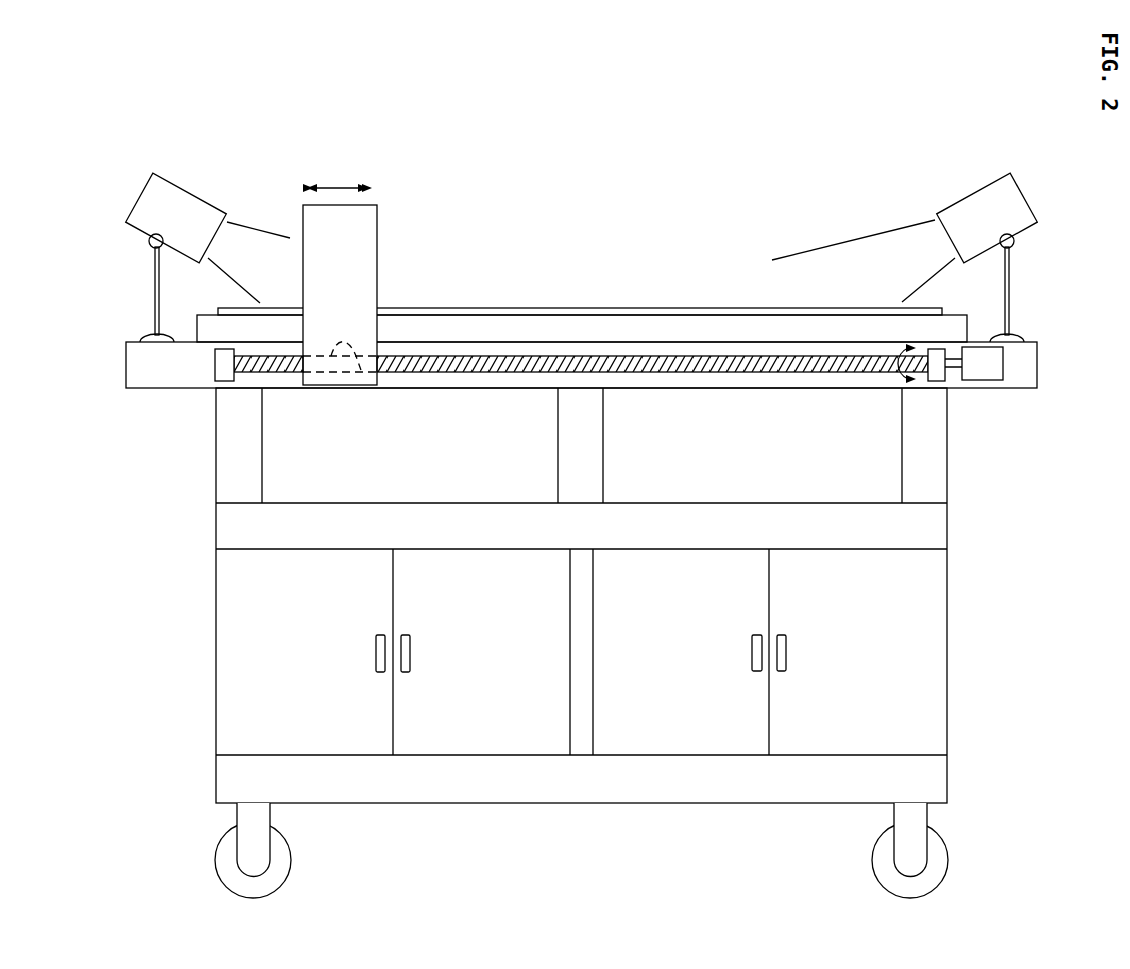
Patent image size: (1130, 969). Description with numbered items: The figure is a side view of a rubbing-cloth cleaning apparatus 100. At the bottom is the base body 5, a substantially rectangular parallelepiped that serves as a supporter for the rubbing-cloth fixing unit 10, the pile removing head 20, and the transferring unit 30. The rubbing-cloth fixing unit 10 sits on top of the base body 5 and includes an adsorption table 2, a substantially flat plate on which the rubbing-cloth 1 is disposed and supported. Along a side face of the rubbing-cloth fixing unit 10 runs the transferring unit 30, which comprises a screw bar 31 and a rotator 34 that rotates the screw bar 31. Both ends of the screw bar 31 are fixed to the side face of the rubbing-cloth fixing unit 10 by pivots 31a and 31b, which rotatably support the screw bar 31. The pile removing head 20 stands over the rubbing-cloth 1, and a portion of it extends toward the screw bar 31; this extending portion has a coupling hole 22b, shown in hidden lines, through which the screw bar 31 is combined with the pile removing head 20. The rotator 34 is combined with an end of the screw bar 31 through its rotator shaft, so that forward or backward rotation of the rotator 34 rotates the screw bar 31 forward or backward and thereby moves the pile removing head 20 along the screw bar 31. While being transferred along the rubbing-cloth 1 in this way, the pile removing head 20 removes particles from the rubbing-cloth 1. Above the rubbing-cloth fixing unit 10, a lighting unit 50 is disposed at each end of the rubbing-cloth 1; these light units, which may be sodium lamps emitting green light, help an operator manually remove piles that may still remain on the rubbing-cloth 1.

The rubbing-cloth cleaning apparatus 100 is at (750, 124).
The rubbing-cloth 1 is at (603, 312).
The adsorption table 2 is at (700, 323).
The rubbing-cloth fixing unit 10 is at (502, 298).
The pile removing head 20 is at (395, 191).
The coupling hole 22b is at (362, 373).
The transferring unit 30 is at (248, 386).
The screw bar 31 is at (285, 371).
The pivot 31a is at (223, 363).
The pivot 31b is at (937, 382).
The rotator 34 is at (990, 380).
The lighting unit 50 is at (180, 203).
The base body 5 is at (932, 650).